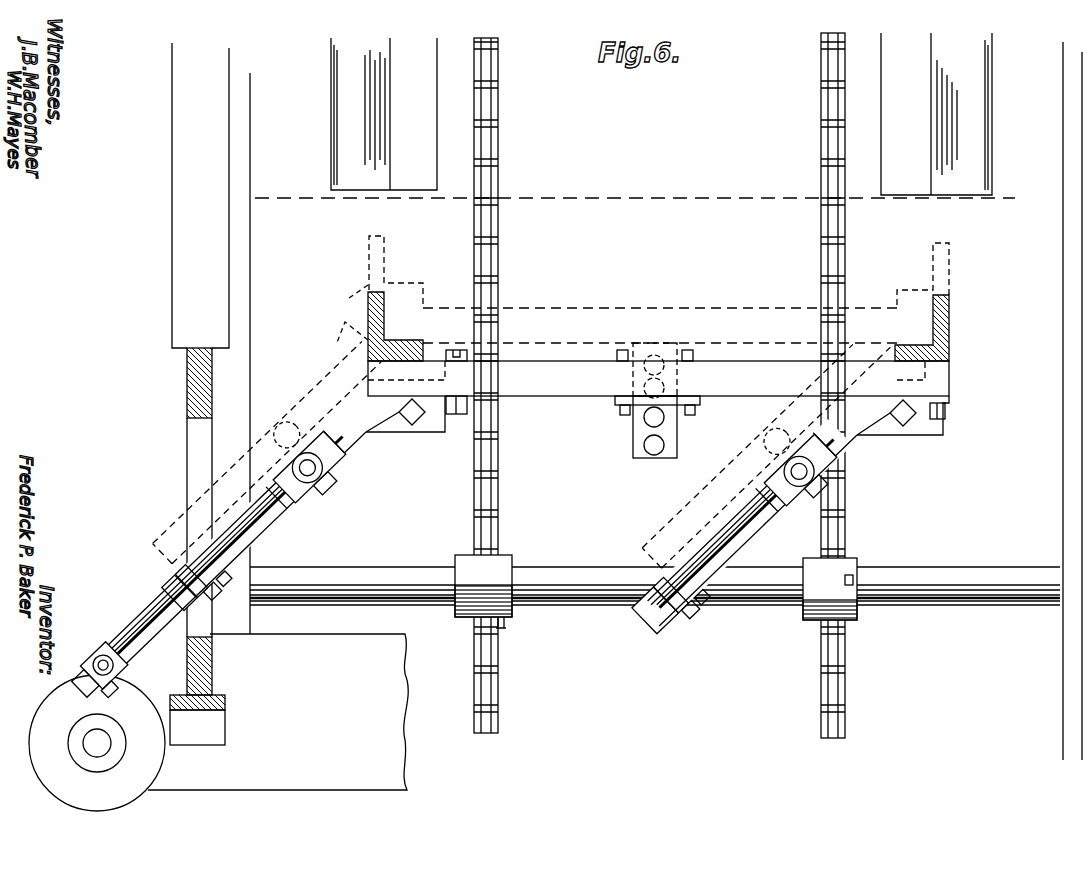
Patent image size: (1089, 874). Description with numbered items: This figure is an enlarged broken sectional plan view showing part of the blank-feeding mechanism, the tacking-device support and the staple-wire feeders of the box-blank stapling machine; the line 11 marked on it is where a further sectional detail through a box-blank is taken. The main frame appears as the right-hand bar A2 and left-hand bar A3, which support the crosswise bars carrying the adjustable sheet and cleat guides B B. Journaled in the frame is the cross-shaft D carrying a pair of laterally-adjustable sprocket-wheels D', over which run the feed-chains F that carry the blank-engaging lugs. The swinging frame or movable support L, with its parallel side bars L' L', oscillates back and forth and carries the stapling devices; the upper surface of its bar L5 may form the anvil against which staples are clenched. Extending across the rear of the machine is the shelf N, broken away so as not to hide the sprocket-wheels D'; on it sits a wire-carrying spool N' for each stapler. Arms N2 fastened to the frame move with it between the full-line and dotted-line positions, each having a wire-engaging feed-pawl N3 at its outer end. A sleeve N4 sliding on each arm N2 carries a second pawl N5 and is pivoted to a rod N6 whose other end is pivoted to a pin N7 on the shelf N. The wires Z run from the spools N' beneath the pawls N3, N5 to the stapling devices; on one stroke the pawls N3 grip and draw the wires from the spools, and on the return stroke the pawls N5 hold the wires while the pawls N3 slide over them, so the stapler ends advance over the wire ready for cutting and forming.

The section line 11 is at (292, 190).
The right-hand bar A2 is at (248, 278).
The left-hand bar A3 is at (1063, 250).
The sheet and cleat guides B is at (1000, 126).
The feed-chains F is at (820, 250).
The swinging frame L is at (657, 355).
The side bars of the swinging frame L' is at (655, 298).
The bar of the frame L5 is at (557, 337).
The cross-shaft D is at (655, 570).
The sprocket-wheels D' is at (656, 626).
The shelf N is at (278, 712).
The wire-carrying spool N' is at (97, 743).
The wires Z is at (680, 643).
The arms N2 is at (776, 541).
The wire-engaging feed-pawl N3 is at (722, 616).
The sleeve N4 is at (882, 470).
The wire-engaging pawl N5 is at (875, 496).
The rod N6 is at (753, 563).
The pin N7 is at (104, 660).